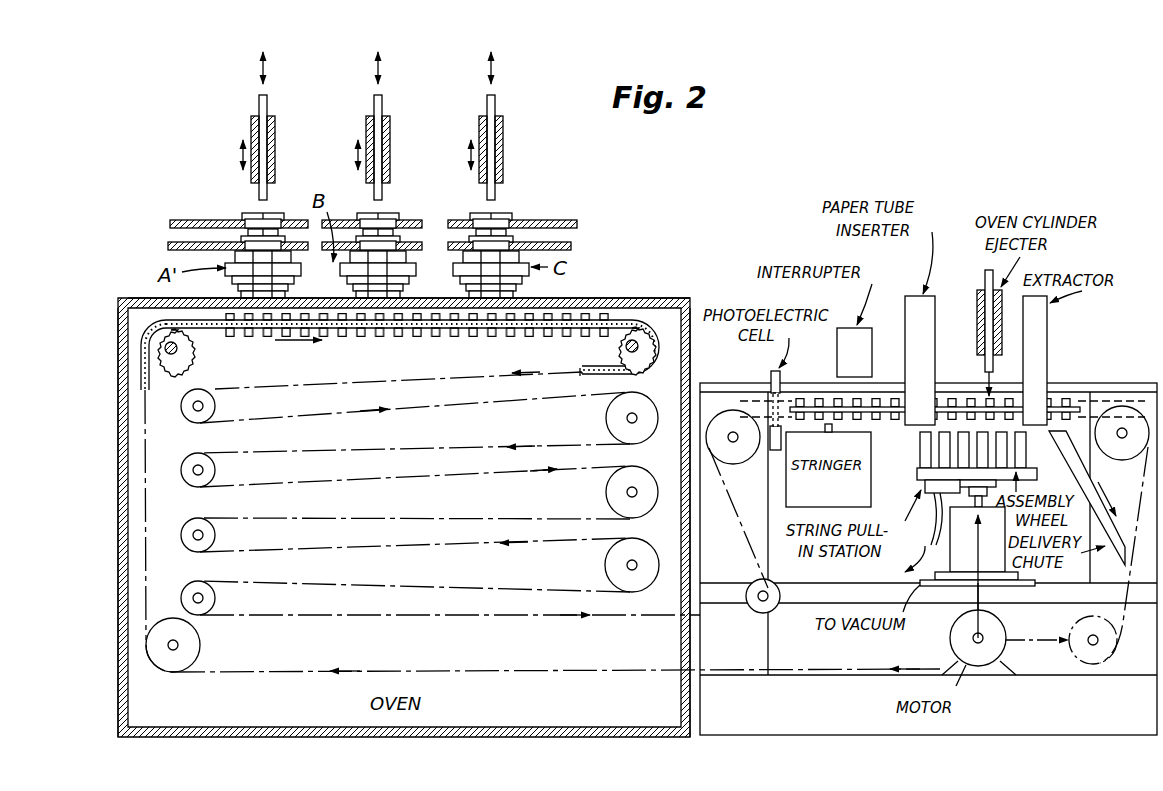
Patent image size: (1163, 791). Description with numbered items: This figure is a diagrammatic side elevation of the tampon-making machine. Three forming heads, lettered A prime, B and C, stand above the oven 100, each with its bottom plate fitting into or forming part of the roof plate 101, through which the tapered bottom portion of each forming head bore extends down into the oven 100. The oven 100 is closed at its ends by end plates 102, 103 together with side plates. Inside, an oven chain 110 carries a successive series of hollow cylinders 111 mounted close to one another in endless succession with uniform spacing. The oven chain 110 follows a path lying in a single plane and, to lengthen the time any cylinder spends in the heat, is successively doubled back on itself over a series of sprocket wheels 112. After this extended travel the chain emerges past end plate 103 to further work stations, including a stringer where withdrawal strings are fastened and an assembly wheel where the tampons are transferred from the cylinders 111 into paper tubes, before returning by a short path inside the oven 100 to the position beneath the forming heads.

The oven 100 is at (116, 328).
The roof plate 101 is at (584, 298).
The end plate 102 is at (118, 377).
The end plate 103 is at (690, 380).
The oven chain 110 is at (442, 337).
The hollow cylinders 111 is at (392, 337).
The sprocket wheels 112 is at (192, 358).